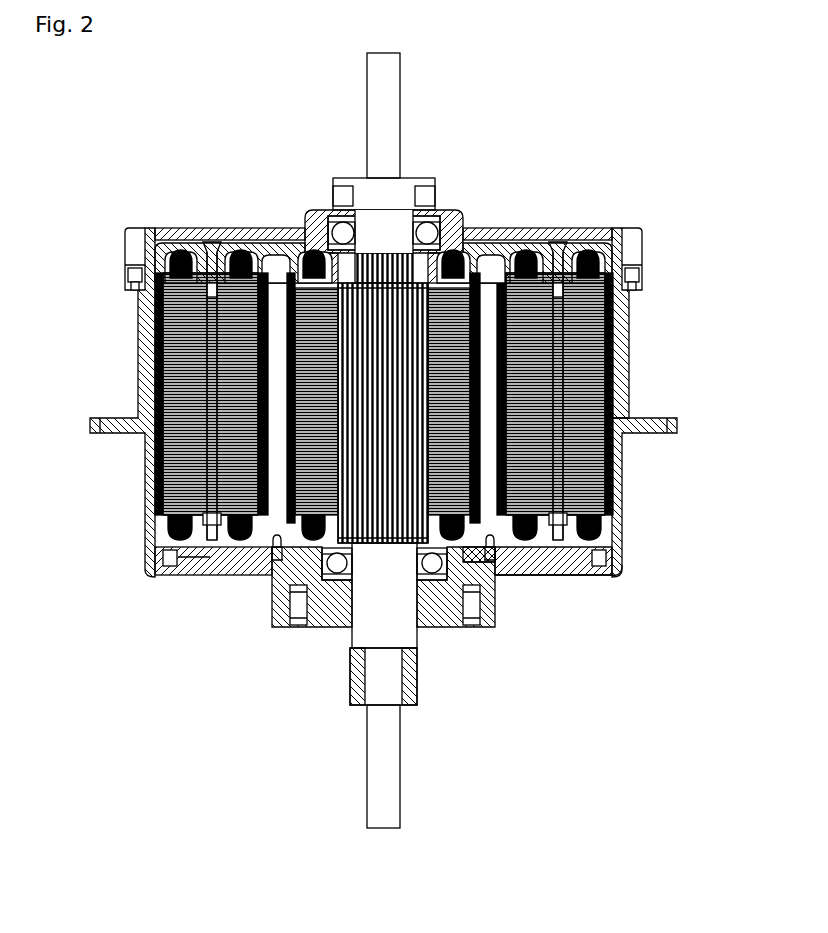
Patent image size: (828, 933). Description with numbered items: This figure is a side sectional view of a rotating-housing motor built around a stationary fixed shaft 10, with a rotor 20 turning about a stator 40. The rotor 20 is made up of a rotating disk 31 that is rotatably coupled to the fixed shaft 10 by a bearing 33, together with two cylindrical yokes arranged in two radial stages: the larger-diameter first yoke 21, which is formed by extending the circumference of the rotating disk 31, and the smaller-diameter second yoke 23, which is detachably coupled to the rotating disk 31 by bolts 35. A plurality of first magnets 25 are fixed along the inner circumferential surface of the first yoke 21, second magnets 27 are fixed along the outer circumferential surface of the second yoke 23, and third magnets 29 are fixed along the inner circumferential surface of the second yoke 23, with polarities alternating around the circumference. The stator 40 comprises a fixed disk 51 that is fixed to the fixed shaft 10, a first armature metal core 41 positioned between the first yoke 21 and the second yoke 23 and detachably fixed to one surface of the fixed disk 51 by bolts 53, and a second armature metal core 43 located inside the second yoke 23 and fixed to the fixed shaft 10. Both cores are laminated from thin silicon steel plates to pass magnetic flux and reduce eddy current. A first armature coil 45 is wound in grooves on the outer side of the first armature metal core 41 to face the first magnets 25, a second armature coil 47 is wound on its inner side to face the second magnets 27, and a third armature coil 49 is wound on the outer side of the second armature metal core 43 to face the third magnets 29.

The fixed shaft 10 is at (393, 88).
The rotor 20 is at (136, 333).
The first yoke 21 is at (620, 527).
The second yoke 23 is at (547, 553).
The first magnets 25 is at (613, 325).
The second magnets 27 is at (510, 255).
The third magnets 29 is at (478, 262).
The rotating disk 31 is at (572, 535).
The bearing 33 is at (428, 608).
The bolts 35 is at (272, 577).
The stator 40 is at (617, 540).
The first armature metal core 41 is at (568, 278).
The second armature metal core 43 is at (274, 258).
The first armature coil 45 is at (585, 240).
The second armature coil 47 is at (240, 253).
The third armature coil 49 is at (322, 262).
The fixed disk 51 is at (538, 242).
The bolts 53 is at (210, 243).